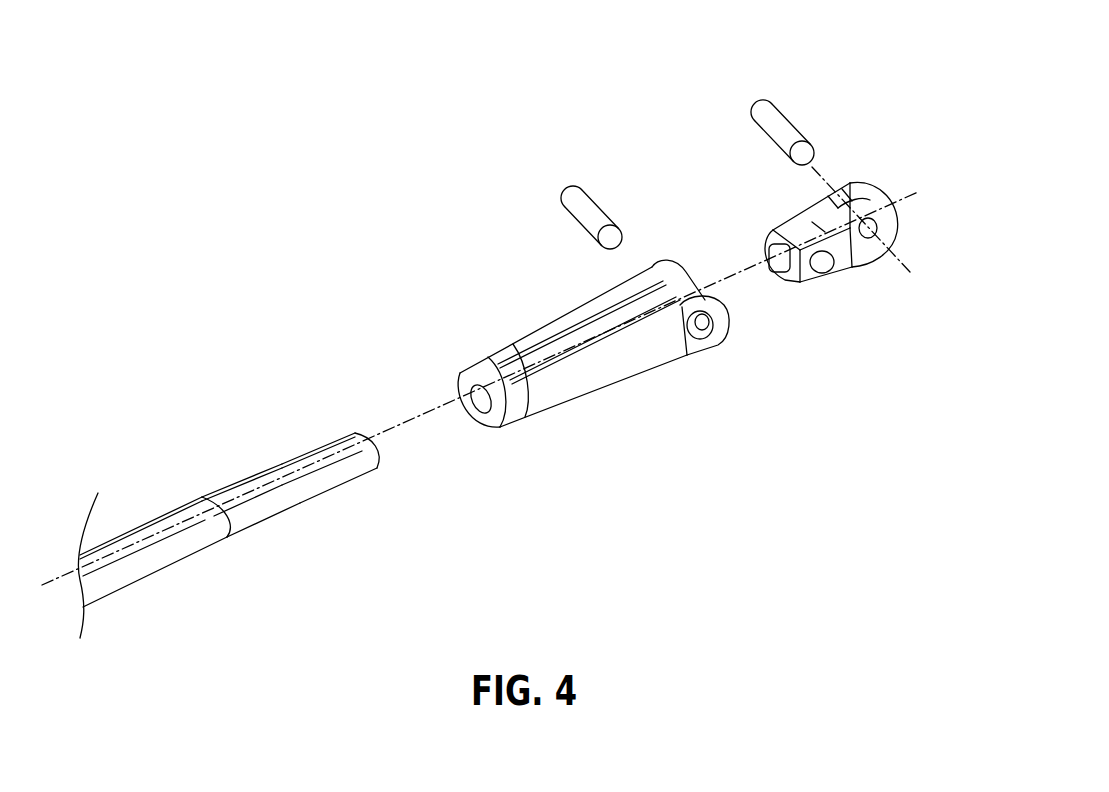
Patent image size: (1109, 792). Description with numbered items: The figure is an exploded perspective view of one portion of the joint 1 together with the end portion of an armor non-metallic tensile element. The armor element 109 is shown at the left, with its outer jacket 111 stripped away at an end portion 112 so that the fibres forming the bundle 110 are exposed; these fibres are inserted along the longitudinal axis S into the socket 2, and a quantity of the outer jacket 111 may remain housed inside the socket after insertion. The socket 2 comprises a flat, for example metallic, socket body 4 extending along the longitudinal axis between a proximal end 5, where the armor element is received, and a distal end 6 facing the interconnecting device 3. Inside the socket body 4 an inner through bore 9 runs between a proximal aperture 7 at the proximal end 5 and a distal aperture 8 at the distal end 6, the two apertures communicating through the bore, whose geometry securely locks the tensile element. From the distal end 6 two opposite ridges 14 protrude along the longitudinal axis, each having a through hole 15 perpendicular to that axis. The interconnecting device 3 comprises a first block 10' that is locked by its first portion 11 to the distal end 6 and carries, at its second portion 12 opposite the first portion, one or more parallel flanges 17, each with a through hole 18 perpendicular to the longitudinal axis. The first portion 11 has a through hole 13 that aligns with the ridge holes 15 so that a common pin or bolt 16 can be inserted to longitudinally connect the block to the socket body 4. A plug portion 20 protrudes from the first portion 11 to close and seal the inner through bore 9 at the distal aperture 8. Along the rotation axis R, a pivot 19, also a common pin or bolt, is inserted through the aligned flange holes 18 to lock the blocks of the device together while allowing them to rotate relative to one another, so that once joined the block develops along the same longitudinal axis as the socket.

The connection arrangement 1 is at (672, 124).
The socket 2 is at (636, 413).
The interconnecting device 3 is at (853, 134).
The socket body 4 is at (558, 383).
The proximal end 5 is at (485, 370).
The distal end 6 is at (657, 273).
The proximal aperture 7 is at (488, 407).
The distal aperture 8 is at (693, 280).
The inner through bore 9 is at (562, 325).
The first block 10' is at (777, 188).
The first portion 11 is at (778, 225).
The second portion 12 is at (882, 197).
The through hole 13 is at (822, 262).
The ridge 14 is at (717, 317).
The through hole 15 is at (700, 327).
The pin or bolt 16 is at (580, 202).
The flange 17 is at (872, 193).
The through hole 18 is at (873, 222).
The pivot 19 is at (778, 117).
The plug portion 20 is at (790, 268).
The armor element 109 is at (219, 446).
The bundle 110 is at (338, 440).
The outer jacket 111 is at (135, 527).
The end portion 112 is at (262, 470).